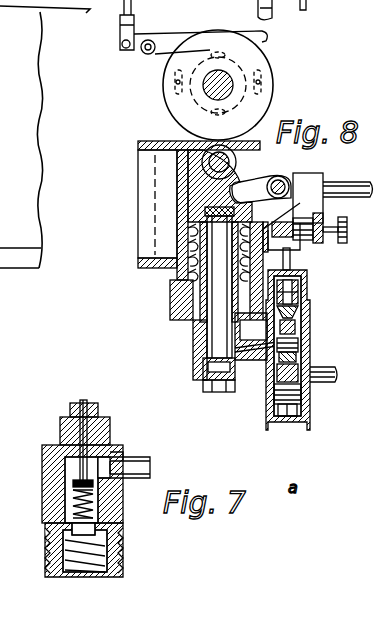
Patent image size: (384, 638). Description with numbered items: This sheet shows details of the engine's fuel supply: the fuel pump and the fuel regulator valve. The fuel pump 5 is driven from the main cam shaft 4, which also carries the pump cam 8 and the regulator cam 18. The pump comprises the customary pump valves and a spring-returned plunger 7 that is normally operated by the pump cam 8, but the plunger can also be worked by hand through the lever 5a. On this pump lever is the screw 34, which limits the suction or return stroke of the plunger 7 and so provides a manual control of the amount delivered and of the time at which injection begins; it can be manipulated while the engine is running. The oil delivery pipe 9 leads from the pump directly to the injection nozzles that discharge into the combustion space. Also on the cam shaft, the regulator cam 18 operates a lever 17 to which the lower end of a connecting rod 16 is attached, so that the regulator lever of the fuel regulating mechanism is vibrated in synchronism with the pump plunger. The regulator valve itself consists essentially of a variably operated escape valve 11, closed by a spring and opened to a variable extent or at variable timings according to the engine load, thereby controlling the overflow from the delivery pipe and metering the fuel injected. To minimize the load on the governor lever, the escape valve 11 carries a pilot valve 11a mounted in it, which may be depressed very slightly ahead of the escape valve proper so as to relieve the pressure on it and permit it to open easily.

In FIG. 8, the main cam shaft 4 is at (210, 90).
In FIG. 8, the fuel pump 5 is at (150, 266).
In FIG. 8, the lever 5a is at (333, 181).
In FIG. 8, the spring-returned plunger 7 is at (205, 322).
In FIG. 8, the pump cam 8 is at (165, 78).
In FIG. 8, the oil delivery pipe 9 is at (290, 253).
In FIG. 7A, the escape valve 11 is at (122, 515).
In FIG. 7A, the pilot valve 11a is at (84, 402).
In FIG. 8, the connecting rod 16 is at (268, 12).
In FIG. 8, the lever 17 is at (177, 50).
In FIG. 8, the regulator cam 18 is at (262, 82).
In FIG. 8, the screw 34 is at (347, 232).